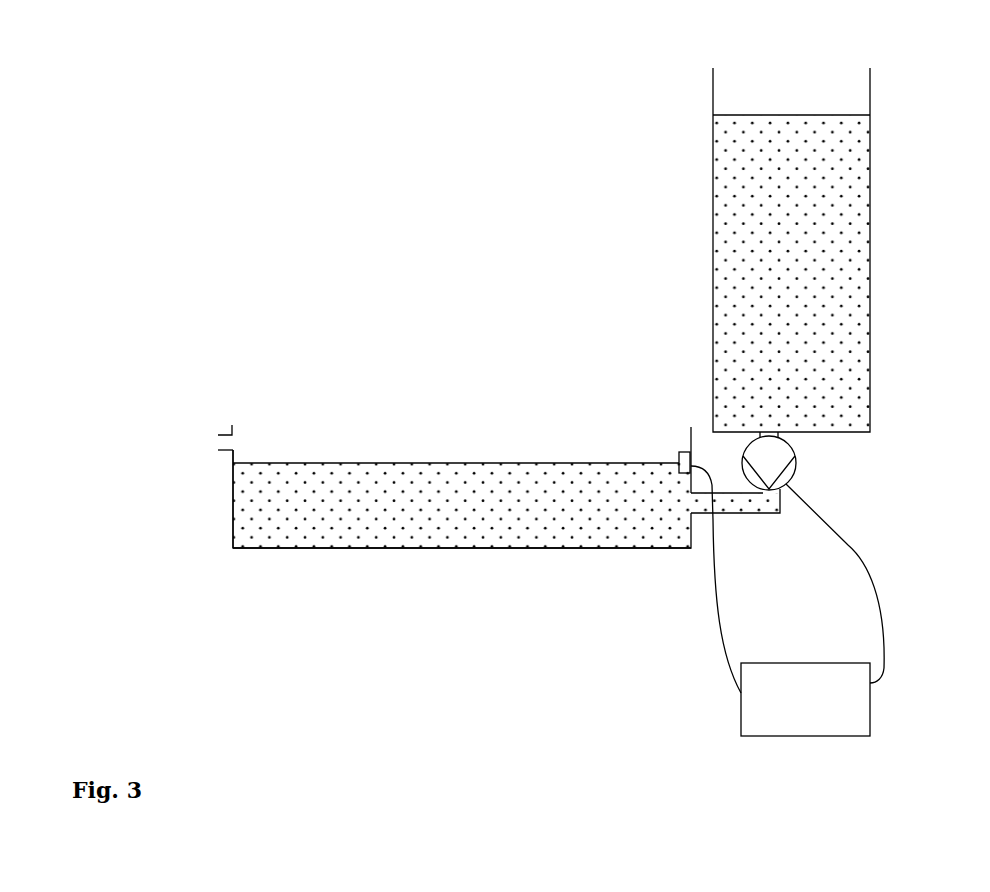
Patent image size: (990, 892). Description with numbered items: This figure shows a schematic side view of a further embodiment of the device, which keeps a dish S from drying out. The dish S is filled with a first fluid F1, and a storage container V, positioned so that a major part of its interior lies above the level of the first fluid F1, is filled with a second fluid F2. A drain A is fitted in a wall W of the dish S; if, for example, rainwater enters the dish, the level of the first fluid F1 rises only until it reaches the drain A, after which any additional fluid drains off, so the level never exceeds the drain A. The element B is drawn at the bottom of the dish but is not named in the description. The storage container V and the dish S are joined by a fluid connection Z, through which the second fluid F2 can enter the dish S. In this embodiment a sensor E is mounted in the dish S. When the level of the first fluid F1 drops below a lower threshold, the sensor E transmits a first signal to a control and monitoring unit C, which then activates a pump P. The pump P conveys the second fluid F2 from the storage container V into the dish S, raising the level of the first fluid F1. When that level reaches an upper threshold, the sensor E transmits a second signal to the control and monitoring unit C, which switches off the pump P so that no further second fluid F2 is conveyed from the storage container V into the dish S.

The drain A is at (217, 443).
The wall W is at (227, 502).
The basin B is at (272, 550).
The dish S is at (440, 553).
The first fluid F1 is at (512, 522).
The second fluid F2 is at (848, 303).
The storage container V is at (872, 225).
The sensor E is at (677, 446).
The fluid connection Z is at (733, 503).
The pump P is at (800, 472).
The control and monitoring unit C is at (787, 601).